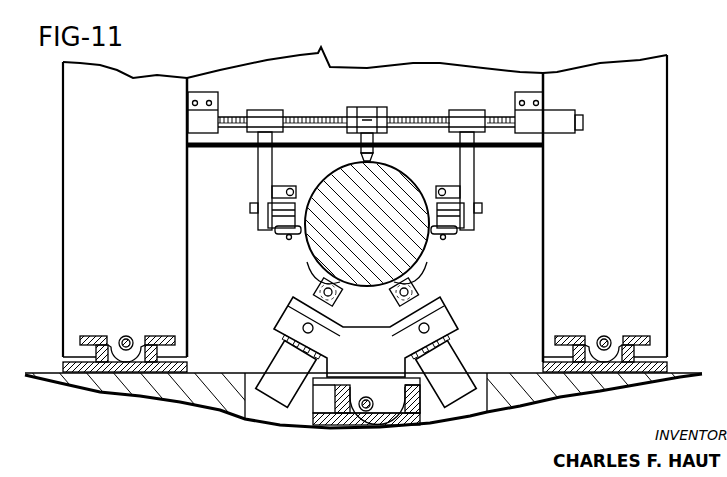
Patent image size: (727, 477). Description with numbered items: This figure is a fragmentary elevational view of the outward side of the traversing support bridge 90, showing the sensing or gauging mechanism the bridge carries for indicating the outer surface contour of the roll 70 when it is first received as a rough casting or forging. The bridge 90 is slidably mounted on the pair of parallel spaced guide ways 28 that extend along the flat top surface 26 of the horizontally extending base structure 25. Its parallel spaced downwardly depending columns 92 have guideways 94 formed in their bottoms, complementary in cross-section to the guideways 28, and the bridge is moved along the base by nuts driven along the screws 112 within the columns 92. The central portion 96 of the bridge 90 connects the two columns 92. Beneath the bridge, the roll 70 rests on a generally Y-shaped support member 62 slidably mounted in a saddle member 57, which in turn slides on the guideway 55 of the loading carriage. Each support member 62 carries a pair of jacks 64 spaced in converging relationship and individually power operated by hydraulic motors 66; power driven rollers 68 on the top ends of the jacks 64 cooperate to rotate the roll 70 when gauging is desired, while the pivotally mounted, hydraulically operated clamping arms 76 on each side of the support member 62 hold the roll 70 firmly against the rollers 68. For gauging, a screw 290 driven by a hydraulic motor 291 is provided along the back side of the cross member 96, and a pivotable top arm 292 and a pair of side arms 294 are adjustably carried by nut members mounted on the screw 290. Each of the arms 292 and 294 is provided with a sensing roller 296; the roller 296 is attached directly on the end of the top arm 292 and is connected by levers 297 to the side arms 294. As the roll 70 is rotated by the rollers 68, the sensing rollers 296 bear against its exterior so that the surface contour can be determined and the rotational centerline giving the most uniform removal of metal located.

The central portion 96 is at (320, 60).
The support bridge 90 is at (63, 157).
The columns 92 is at (63, 284).
The screw 290 is at (422, 116).
The hydraulic motor 291 is at (561, 117).
The side arms 294 is at (261, 172).
The levers 297 is at (282, 220).
The sensing roller 296 is at (357, 157).
The top arm 292 is at (374, 132).
The roll 70 is at (428, 256).
The power driven rollers 68 is at (315, 266).
The jacks 64 is at (310, 300).
The Y-shaped support members 62 is at (372, 367).
The clamping arms 76 is at (286, 322).
The hydraulic motors 66 is at (278, 398).
The saddle members 57 is at (318, 390).
The guideway 55 is at (340, 424).
The top surface 26 is at (40, 375).
The base structure 25 is at (170, 393).
The guide ways 28 is at (107, 372).
The guideways 94 is at (84, 338).
The screws 112 is at (126, 336).